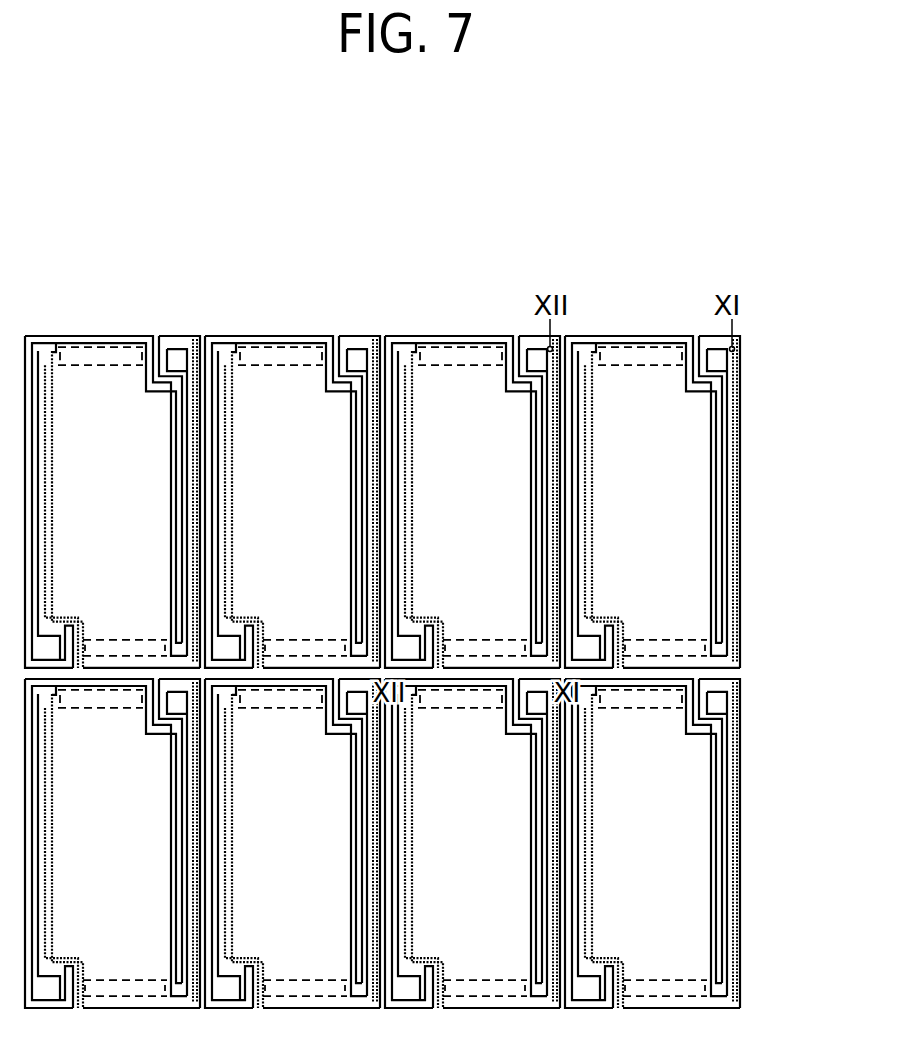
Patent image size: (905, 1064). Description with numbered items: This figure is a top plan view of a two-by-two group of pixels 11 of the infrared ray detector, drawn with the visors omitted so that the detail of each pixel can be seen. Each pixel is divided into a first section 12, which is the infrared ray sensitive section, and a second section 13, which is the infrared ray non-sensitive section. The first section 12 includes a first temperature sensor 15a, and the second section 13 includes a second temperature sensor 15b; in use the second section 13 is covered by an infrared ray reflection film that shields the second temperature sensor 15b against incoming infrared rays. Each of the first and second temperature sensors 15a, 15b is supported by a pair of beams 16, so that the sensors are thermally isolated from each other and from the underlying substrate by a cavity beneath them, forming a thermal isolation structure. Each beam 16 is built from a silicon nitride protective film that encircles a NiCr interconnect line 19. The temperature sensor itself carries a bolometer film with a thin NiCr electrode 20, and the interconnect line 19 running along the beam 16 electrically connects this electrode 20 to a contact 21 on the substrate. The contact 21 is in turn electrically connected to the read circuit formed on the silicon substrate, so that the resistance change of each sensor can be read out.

The pixels 11 is at (698, 229).
The first section 12 is at (558, 278).
The second section 13 is at (410, 278).
The first temperature sensor 15a is at (680, 487).
The second temperature sensor 15b is at (440, 388).
The beam 16 is at (742, 428).
The interconnect line 19 is at (736, 550).
The electrode 20 is at (678, 641).
The contact 21 is at (736, 360).